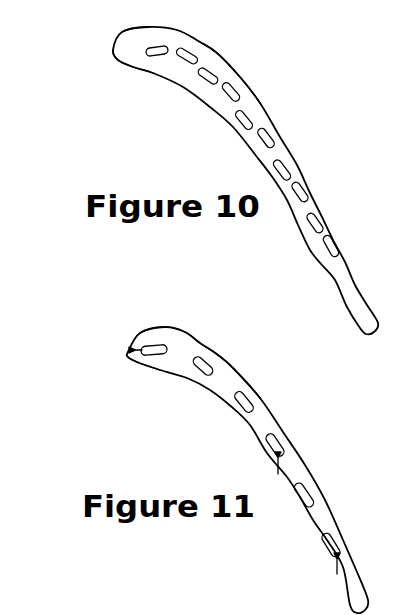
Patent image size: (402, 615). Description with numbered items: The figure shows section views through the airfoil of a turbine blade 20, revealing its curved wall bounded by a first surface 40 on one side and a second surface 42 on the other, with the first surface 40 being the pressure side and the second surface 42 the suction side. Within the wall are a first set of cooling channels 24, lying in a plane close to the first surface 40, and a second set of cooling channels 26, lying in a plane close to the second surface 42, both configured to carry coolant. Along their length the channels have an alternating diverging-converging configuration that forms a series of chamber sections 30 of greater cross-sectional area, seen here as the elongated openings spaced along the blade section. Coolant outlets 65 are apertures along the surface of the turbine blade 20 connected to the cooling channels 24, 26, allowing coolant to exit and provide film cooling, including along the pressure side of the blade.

In FIG. 10, the turbine blade 20 is at (206, 179).
In FIG. 11, the turbine blade 20 is at (220, 451).
In FIG. 10, the first set of cooling channels 24 is at (243, 118).
In FIG. 11, the first set of cooling channels 24 is at (297, 500).
In FIG. 10, the second set of cooling channels 26 is at (237, 92).
In FIG. 11, the second set of cooling channels 26 is at (313, 492).
In FIG. 11, the chamber sections 30 is at (247, 400).
In FIG. 10, the first surface 40 is at (153, 71).
In FIG. 11, the first surface 40 is at (195, 385).
In FIG. 10, the second surface 42 is at (217, 53).
In FIG. 11, the second surface 42 is at (237, 368).
In FIG. 11, the coolant outlet 65 is at (133, 353).